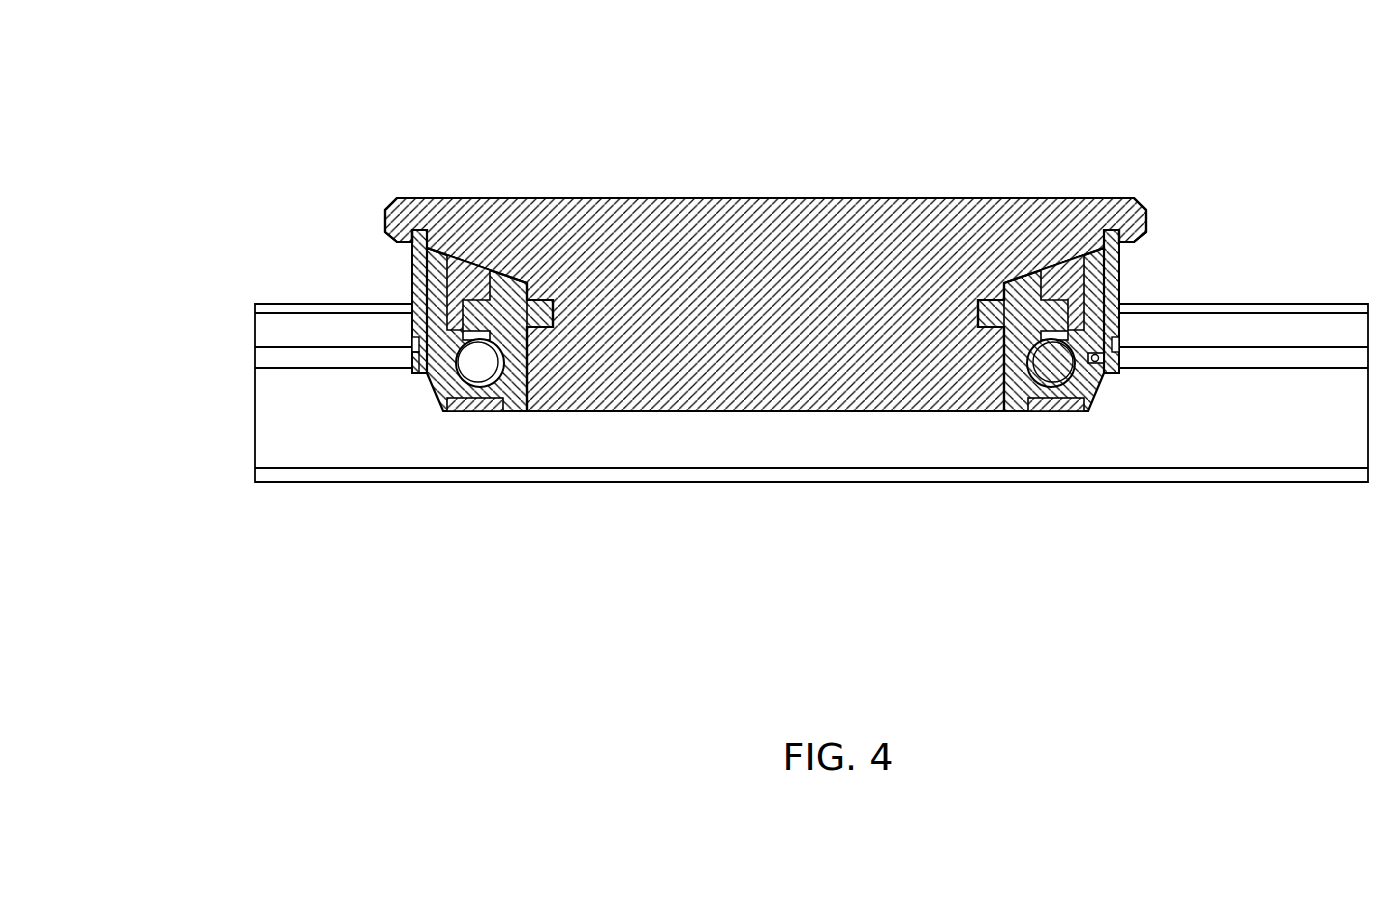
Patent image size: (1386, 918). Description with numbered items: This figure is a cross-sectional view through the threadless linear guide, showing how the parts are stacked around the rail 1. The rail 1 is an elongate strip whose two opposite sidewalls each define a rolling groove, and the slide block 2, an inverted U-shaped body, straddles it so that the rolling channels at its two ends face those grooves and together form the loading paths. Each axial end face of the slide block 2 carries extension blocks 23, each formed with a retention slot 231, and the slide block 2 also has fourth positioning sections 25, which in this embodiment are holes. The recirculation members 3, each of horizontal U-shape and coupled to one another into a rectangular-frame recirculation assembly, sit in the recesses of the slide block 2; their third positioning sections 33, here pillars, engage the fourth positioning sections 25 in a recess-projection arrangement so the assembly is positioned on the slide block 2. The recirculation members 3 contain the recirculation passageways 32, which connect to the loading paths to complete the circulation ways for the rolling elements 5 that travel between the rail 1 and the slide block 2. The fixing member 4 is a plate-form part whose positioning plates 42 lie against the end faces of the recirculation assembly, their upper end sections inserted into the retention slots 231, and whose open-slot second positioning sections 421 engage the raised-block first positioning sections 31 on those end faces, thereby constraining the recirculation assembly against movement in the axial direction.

The rail 1 is at (1245, 442).
The slide block 2 is at (724, 222).
The extension block 23 is at (437, 218).
The retention slot 231 is at (413, 226).
The fourth positioning section 25 is at (553, 300).
The recirculation member 3 is at (508, 392).
The first positioning section 31 is at (413, 348).
The recirculation passageway 32 is at (1053, 385).
The third positioning section 33 is at (552, 325).
The fixing member 4 is at (1119, 273).
The positioning plate 42 is at (412, 275).
The second positioning section 421 is at (413, 340).
The ball 5 is at (473, 370).